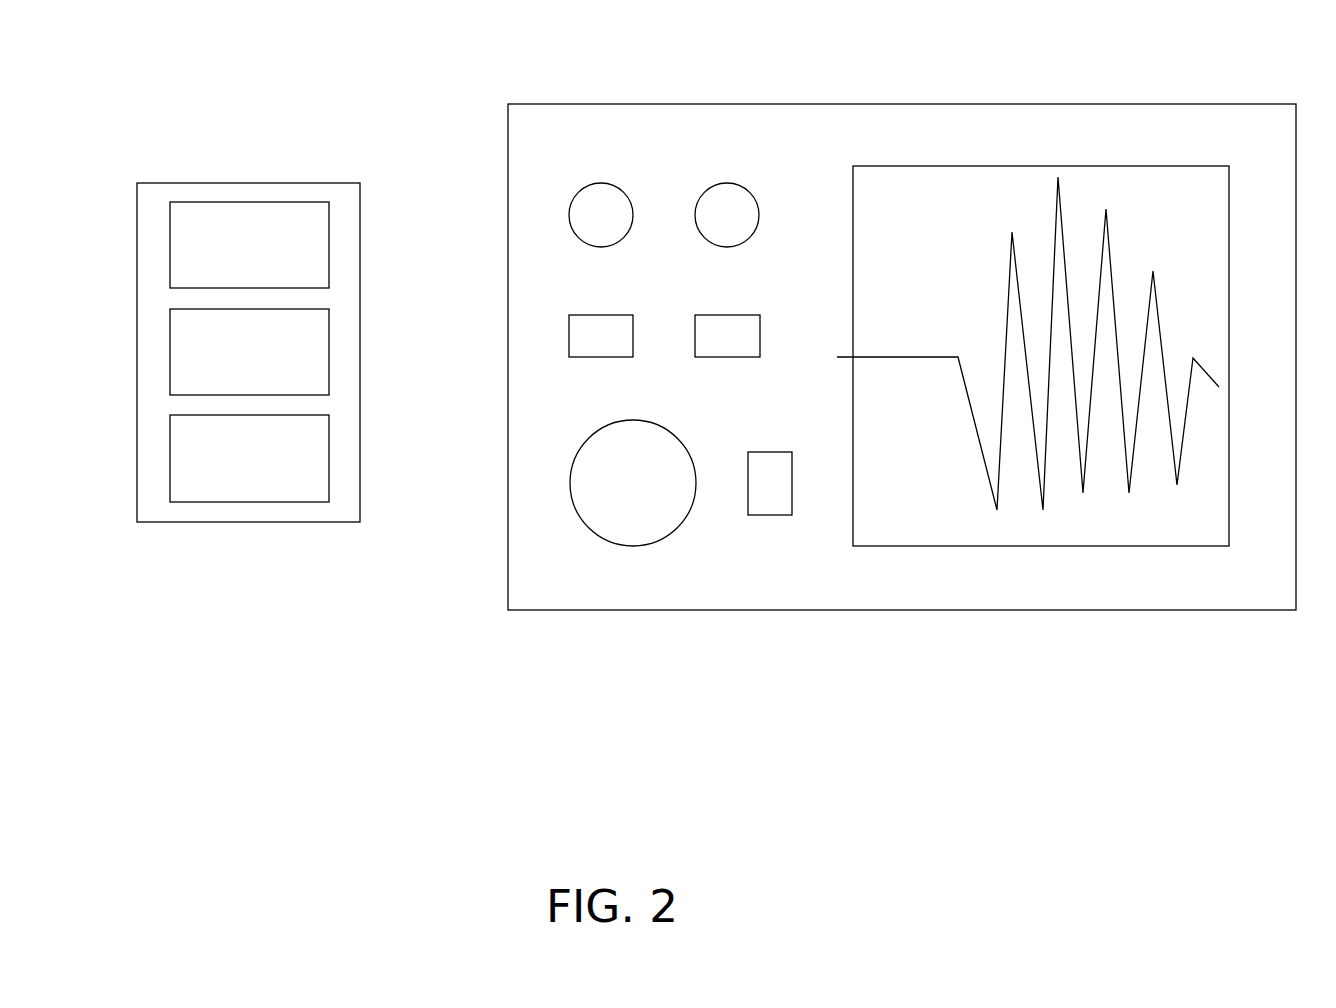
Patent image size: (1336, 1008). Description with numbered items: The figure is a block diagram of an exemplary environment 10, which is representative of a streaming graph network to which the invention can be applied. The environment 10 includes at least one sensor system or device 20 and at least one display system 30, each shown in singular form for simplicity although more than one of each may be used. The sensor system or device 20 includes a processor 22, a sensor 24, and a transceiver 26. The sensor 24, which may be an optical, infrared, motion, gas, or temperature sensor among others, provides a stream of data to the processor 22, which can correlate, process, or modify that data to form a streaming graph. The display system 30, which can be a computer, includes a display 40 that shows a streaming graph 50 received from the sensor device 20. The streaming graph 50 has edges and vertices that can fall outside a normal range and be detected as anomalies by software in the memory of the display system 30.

The environment 10 is at (322, 43).
The sensor system or device 20 is at (210, 153).
The processor 22 is at (235, 273).
The sensor 24 is at (235, 378).
The transceiver 26 is at (235, 485).
The display system 30 is at (528, 90).
The display 40 is at (921, 258).
The streaming graph 50 is at (1110, 463).